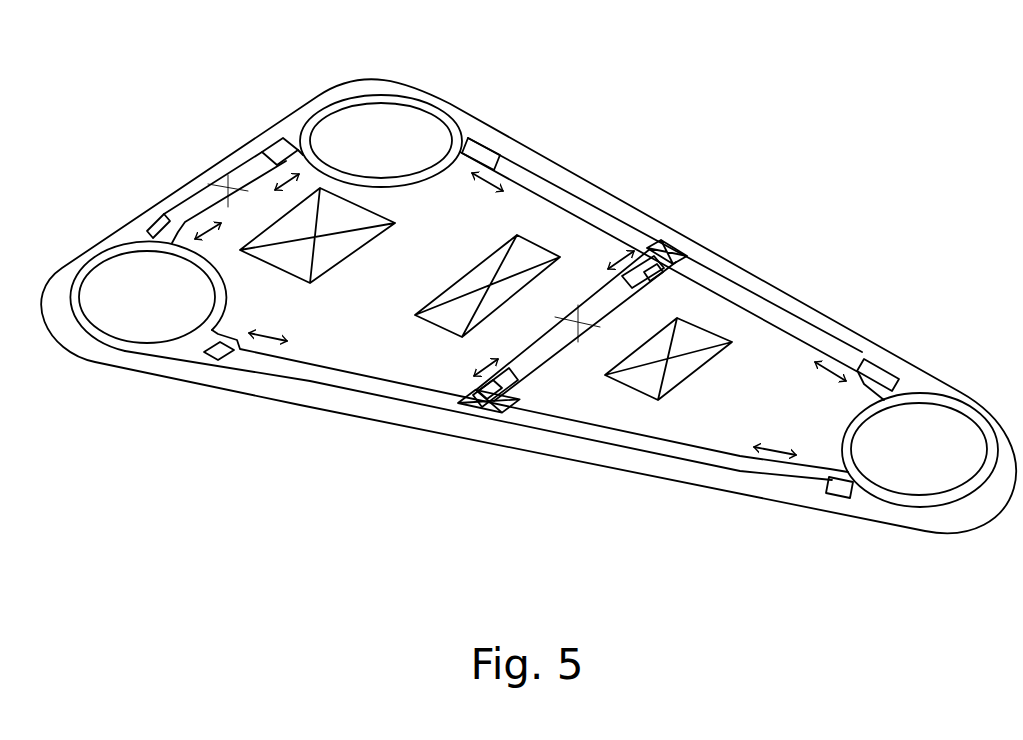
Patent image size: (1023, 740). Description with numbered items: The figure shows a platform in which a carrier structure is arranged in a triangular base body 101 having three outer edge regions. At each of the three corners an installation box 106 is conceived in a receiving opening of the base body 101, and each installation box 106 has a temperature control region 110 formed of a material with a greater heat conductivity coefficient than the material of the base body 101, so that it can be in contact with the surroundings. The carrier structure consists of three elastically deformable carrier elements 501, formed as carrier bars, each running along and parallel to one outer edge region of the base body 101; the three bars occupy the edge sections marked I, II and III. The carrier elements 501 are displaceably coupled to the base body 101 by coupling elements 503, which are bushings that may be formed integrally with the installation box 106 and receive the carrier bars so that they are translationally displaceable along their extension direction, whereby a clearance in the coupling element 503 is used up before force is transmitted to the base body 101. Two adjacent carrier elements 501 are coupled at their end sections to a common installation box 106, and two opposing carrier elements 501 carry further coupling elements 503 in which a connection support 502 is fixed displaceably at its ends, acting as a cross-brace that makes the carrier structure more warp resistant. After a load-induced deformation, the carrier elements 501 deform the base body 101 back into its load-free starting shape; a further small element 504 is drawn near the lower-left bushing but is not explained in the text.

The base body 101 is at (357, 342).
The installation box 106 is at (442, 107).
The temperature control region 110 is at (327, 267).
The carrier element 501 is at (203, 198).
The connection support 502 is at (603, 302).
The coupling element 503 is at (283, 136).
The fixed pad 504 is at (197, 362).
The bottom rail section I is at (427, 420).
The upper-right rail section II is at (665, 232).
The upper-left rail section III is at (238, 157).